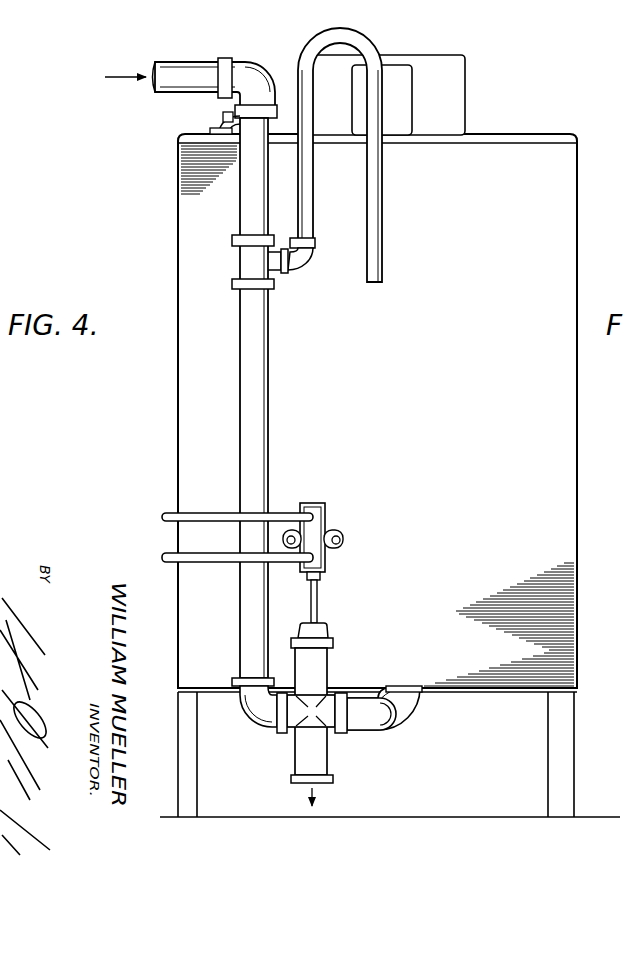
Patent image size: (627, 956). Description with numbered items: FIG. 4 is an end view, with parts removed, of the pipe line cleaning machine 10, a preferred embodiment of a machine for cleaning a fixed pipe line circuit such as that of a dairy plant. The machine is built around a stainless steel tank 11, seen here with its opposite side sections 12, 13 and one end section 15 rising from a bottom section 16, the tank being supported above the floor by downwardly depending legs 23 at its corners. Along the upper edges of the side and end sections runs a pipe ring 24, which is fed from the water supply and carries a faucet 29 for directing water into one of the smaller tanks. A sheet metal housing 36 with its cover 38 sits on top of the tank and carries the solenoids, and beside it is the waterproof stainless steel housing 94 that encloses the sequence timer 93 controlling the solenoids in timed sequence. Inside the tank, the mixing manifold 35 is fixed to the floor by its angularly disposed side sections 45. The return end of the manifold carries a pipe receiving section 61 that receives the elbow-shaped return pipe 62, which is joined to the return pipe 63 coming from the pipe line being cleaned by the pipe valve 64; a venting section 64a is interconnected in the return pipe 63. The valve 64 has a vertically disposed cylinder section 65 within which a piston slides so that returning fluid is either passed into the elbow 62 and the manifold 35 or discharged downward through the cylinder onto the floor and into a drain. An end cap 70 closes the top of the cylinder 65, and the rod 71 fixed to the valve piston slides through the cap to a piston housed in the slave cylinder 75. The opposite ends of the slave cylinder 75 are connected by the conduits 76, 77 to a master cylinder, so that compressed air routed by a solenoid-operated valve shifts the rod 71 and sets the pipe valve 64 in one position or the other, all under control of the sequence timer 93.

The machine for cleaning a fixed pipe line circuit 10 is at (528, 90).
The tank 11 is at (580, 572).
The side section 12 is at (178, 438).
The side section 13 is at (577, 253).
The end section 15 is at (475, 441).
The bottom section 16 is at (523, 689).
The legs 23 is at (195, 790).
The pipe ring 24 is at (527, 131).
The faucet 29 is at (214, 119).
The mixing manifold 35 is at (403, 728).
The sheet metal housing 36 is at (413, 109).
The cover 38 is at (405, 82).
The side sections 45 is at (426, 693).
The pipe receiving section 61 is at (407, 704).
The return pipe 62 is at (373, 718).
The return pipe 63 is at (266, 376).
The pipe valve 64 is at (331, 673).
The venting section 64a is at (307, 213).
The cylinder section 65 is at (328, 653).
The end cap 70 is at (308, 633).
The rod 71 is at (318, 594).
The slave cylinder 75 is at (320, 528).
The conduit 76 is at (217, 554).
The conduit 77 is at (201, 513).
The sequence timer 93 is at (466, 89).
The housing 94 is at (444, 62).